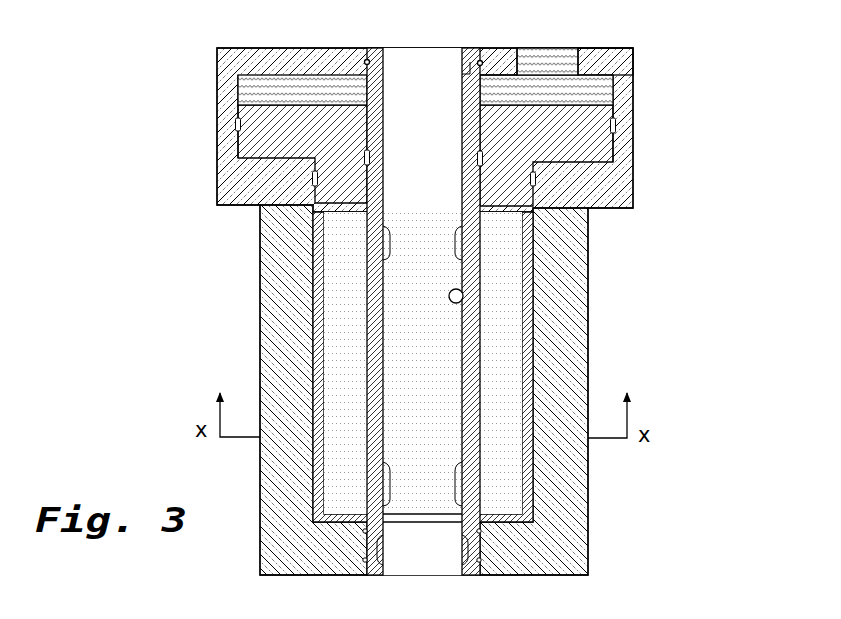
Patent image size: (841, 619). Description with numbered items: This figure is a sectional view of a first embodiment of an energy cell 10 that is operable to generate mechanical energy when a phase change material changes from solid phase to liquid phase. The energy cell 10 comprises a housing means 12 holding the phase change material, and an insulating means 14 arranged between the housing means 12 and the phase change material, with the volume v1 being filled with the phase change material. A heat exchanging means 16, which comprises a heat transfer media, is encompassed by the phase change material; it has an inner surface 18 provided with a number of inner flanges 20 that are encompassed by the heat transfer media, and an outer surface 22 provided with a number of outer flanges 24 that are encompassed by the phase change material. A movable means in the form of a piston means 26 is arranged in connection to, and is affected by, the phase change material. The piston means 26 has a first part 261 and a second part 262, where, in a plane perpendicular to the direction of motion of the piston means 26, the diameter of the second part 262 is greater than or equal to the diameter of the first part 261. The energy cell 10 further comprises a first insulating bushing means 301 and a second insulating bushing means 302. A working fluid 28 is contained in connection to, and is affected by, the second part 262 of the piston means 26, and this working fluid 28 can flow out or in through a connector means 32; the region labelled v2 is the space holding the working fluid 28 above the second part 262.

The energy cell 10 is at (713, 442).
The housing means 12 is at (572, 193).
The insulating means 14 is at (533, 258).
The heat exchanging means 16 is at (480, 332).
The inner surface 18 is at (463, 288).
The inner flanges 20 is at (427, 378).
The outer surface 22 is at (367, 283).
The outer flanges 24 is at (343, 315).
The piston means 26 is at (580, 142).
The working fluid 28 is at (553, 62).
The connector means 32 is at (583, 66).
The first part 261 is at (330, 193).
The second part 262 is at (265, 150).
The first insulating bushing means 301 is at (480, 130).
The second insulating bushing means 302 is at (467, 527).
The volume v1 is at (343, 385).
The second chamber volume v2 is at (265, 90).